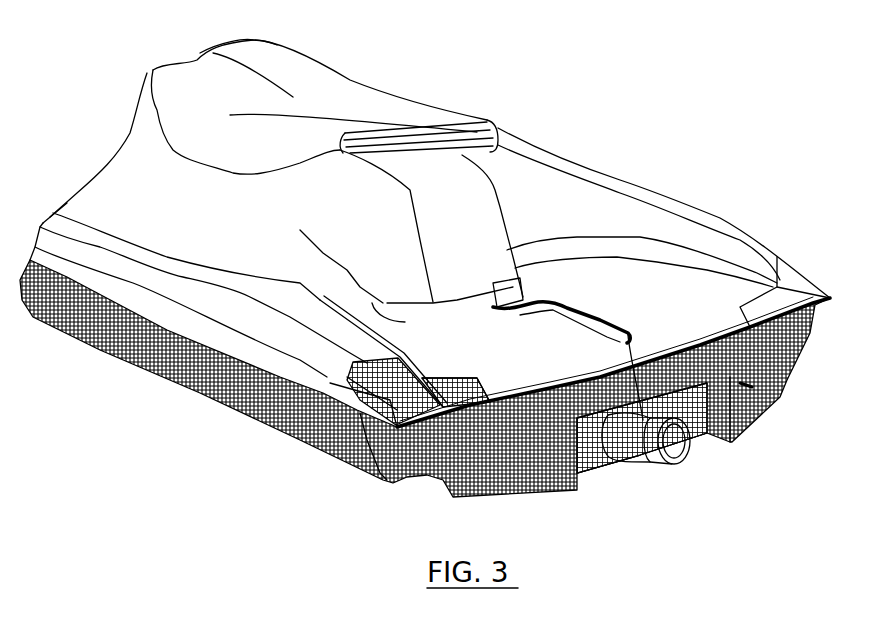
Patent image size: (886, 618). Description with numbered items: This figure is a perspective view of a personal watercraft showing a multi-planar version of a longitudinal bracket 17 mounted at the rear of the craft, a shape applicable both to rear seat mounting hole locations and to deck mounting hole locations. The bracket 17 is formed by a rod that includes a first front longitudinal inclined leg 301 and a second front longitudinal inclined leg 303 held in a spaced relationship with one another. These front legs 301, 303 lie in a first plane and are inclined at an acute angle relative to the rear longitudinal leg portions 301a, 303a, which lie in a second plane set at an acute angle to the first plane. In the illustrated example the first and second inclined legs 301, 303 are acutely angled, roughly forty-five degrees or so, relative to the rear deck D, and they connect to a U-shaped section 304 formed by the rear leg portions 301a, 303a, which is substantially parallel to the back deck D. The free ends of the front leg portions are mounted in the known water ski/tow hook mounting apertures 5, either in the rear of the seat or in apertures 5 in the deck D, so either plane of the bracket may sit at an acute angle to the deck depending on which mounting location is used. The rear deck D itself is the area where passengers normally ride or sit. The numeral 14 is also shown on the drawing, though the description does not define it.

The water ski/tow hook mounting apertures 5 is at (520, 300).
The rear deck 14 is at (632, 333).
The bracket 17 is at (610, 275).
The first front longitudinal inclined leg 301 is at (642, 260).
The rear longitudinal leg portion 301a is at (628, 318).
The second front longitudinal inclined leg 303 is at (503, 315).
The rear longitudinal leg portion 303a is at (552, 315).
The U-shaped section 304 is at (650, 458).
The rear deck D is at (782, 387).